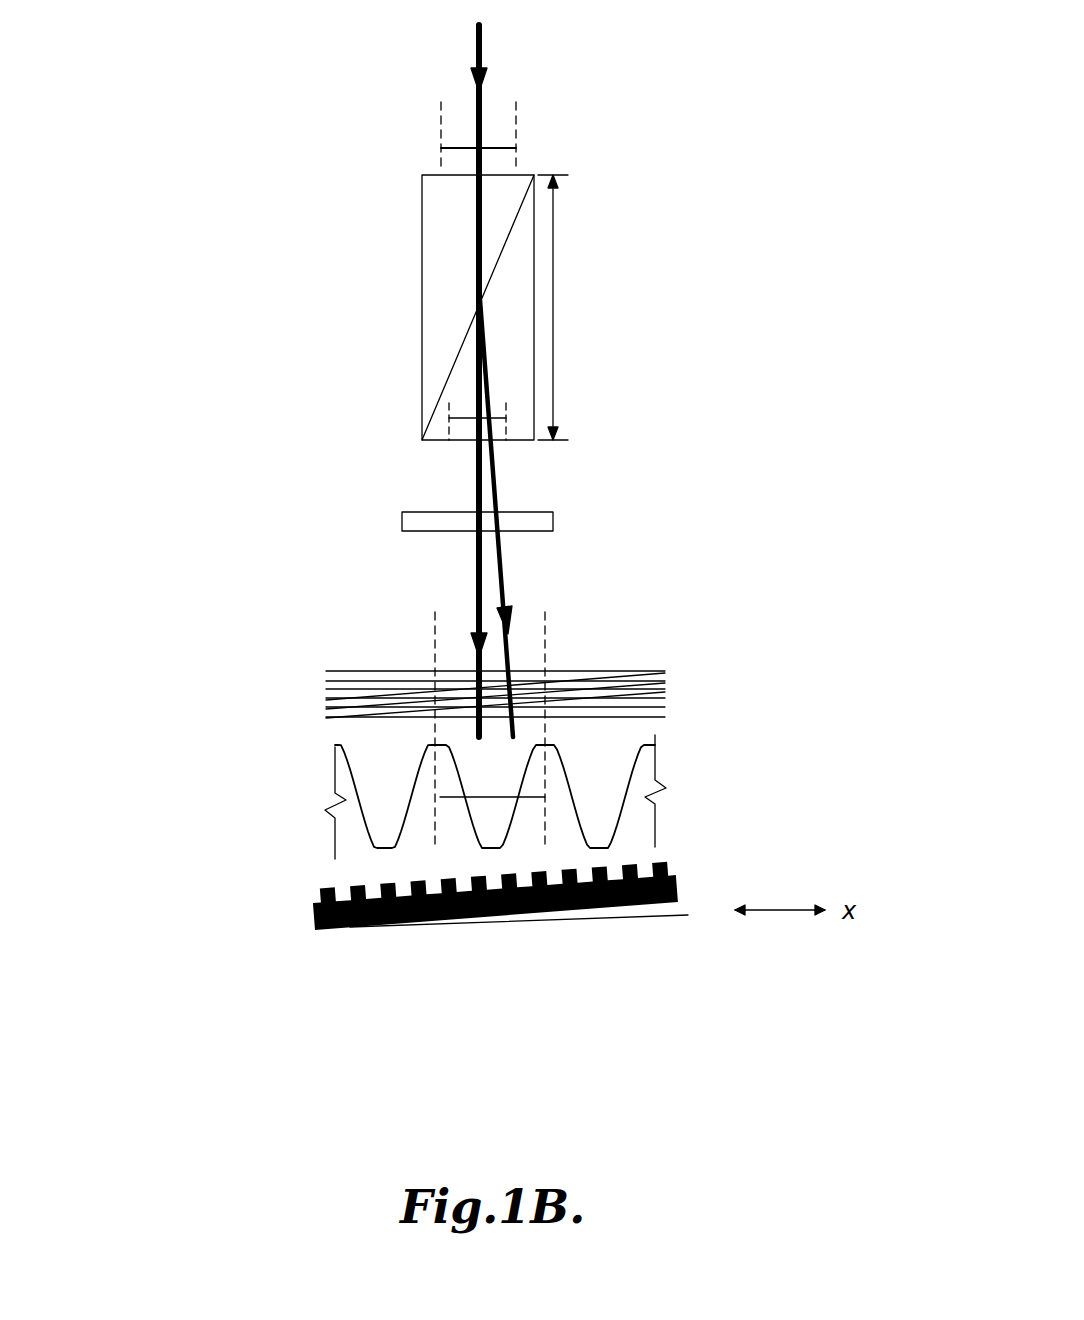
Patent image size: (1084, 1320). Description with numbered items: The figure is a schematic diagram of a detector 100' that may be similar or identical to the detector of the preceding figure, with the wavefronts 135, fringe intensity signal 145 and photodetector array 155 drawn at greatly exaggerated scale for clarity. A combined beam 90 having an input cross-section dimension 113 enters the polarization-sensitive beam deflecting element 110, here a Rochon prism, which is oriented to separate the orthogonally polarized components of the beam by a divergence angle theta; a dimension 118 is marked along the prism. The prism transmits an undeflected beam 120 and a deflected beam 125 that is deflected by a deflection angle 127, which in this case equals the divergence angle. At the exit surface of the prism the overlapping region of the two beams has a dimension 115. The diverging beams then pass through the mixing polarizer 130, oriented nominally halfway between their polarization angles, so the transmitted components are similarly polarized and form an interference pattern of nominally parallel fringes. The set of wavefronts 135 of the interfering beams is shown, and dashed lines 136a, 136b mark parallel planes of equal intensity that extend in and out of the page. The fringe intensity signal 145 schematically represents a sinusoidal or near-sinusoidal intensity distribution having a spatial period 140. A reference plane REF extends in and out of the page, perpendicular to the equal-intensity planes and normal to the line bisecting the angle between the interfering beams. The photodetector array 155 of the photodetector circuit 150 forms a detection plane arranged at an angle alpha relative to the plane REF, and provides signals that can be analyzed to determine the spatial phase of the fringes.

The detector 100' is at (174, 241).
The combined beam 90 is at (482, 106).
The input cross-section dimension 113 is at (441, 148).
The polarization-sensitive beam deflecting element 110 is at (422, 248).
The modulator length 118 is at (553, 292).
The dimension 115 is at (463, 417).
The undeflected beam 120 is at (477, 483).
The deflected beam 125 is at (493, 462).
The mixing polarizer 130 is at (437, 531).
The deflection angle 127 is at (488, 573).
The wavefronts 135 is at (326, 686).
The dashed line 136a is at (435, 647).
The dashed line 136b is at (545, 647).
The spatial period 140 is at (440, 797).
The fringe intensity signal 145 is at (362, 810).
The photodetector array 155 is at (320, 890).
The photodetector circuit 150 is at (423, 915).
The reference plane REF is at (645, 917).